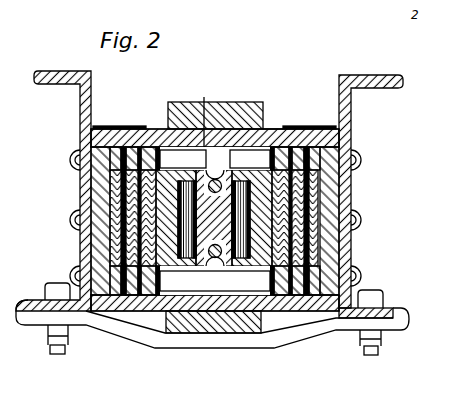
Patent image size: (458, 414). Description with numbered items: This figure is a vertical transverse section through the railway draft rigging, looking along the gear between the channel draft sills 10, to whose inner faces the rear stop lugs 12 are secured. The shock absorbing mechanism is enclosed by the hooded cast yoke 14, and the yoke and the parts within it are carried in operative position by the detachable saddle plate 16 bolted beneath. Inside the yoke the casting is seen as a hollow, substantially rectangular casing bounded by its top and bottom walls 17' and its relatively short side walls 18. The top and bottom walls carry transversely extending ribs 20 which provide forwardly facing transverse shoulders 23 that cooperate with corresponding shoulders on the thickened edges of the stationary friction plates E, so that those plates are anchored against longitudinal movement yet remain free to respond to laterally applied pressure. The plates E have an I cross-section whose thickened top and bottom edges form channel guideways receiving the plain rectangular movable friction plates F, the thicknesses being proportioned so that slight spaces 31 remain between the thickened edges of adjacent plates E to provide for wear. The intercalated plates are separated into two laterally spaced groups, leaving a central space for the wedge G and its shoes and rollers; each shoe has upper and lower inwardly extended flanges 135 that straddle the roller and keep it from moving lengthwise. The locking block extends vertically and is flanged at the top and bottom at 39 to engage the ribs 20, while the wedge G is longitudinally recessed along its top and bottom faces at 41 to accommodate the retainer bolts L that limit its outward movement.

The channel draft sill 10 is at (356, 108).
The rear stop lug 12 is at (95, 118).
The hooded cast yoke 14 is at (231, 94).
The detachable saddle plate 16 is at (403, 316).
The top and bottom wall 17' is at (215, 217).
The side wall 18 is at (86, 183).
The transversely extending rib 20 is at (155, 120).
The forwardly facing transverse shoulder 23 is at (259, 121).
The space 31 is at (303, 122).
The flange 39 is at (221, 276).
The longitudinal recess 41 is at (206, 114).
The inwardly extended flange 135 is at (215, 220).
The stationary friction plate E is at (111, 227).
The movable friction plate F is at (133, 242).
The wedge G is at (214, 218).
The retainer bolt L is at (215, 210).